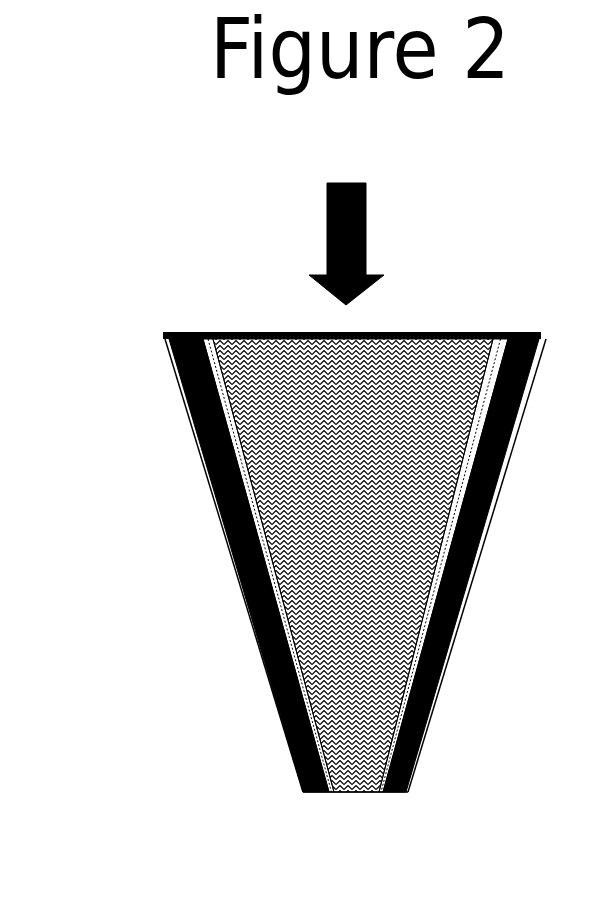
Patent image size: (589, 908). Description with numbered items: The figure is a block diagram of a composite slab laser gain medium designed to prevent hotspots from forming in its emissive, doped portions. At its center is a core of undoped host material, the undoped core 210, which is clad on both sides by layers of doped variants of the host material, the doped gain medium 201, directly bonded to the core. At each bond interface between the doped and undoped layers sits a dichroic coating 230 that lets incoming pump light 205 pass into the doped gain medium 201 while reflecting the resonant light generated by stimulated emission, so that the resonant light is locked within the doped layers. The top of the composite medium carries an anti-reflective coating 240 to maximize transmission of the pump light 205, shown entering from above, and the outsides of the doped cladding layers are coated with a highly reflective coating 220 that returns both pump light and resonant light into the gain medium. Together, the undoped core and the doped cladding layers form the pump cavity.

The doped gain medium 201 is at (354, 602).
The pump light 205 is at (421, 235).
The undoped core 210 is at (353, 597).
The highly reflective coating 220 is at (282, 565).
The dichroic coating 230 is at (355, 523).
The anti-reflective coating 240 is at (289, 307).